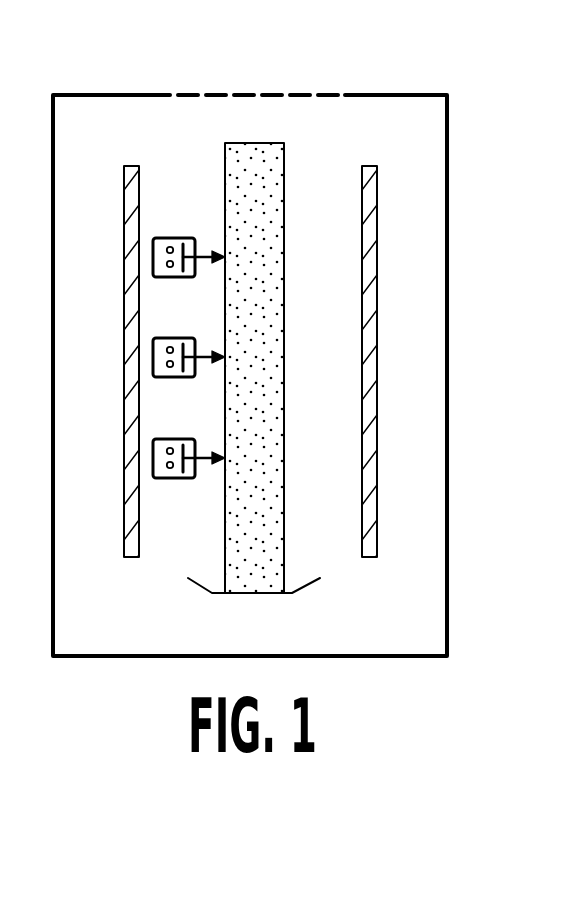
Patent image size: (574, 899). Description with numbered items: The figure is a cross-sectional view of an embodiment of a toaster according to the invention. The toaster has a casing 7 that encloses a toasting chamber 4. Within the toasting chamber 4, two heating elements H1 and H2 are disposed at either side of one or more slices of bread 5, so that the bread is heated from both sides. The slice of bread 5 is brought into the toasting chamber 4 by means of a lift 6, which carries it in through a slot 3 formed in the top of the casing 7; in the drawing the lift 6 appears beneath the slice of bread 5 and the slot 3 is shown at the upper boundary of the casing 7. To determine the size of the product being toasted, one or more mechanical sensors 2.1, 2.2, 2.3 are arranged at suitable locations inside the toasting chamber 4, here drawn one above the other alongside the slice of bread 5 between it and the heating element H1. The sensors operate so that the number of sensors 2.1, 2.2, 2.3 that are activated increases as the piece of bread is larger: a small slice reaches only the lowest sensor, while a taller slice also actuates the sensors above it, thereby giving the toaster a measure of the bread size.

The mechanical sensor 2.1 is at (185, 277).
The mechanical sensor 2.2 is at (185, 377).
The mechanical sensor 2.3 is at (185, 478).
The slot 3 is at (275, 91).
The toasting chamber 4 is at (318, 275).
The slice of bread 5 is at (251, 143).
The lift 6 is at (291, 595).
The casing 7 is at (450, 612).
The heating element H1 is at (131, 193).
The heating element H2 is at (370, 196).